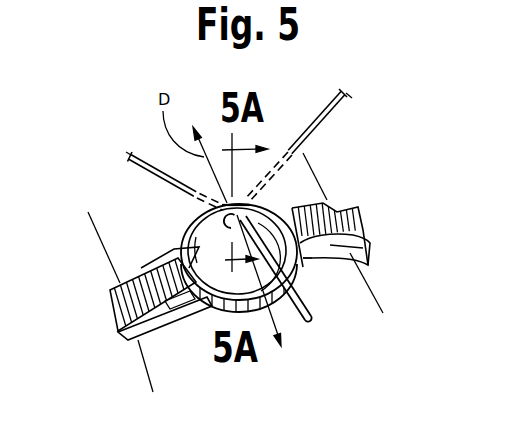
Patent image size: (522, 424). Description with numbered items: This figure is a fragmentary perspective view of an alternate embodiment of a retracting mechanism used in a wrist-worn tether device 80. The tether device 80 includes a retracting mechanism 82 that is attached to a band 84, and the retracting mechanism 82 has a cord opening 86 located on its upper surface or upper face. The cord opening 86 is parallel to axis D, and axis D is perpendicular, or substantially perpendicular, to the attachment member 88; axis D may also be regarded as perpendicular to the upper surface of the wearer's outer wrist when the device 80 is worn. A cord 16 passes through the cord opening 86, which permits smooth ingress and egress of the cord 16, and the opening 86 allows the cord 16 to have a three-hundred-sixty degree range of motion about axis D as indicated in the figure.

The cord 16 is at (148, 158).
The tether device 80 is at (355, 155).
The retracting mechanism 82 is at (296, 300).
The band 84 is at (358, 222).
The cord opening 86 is at (180, 217).
The attachment member 88 is at (220, 313).